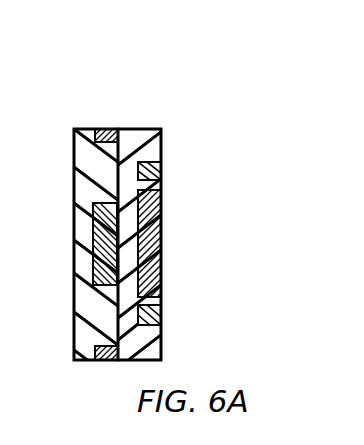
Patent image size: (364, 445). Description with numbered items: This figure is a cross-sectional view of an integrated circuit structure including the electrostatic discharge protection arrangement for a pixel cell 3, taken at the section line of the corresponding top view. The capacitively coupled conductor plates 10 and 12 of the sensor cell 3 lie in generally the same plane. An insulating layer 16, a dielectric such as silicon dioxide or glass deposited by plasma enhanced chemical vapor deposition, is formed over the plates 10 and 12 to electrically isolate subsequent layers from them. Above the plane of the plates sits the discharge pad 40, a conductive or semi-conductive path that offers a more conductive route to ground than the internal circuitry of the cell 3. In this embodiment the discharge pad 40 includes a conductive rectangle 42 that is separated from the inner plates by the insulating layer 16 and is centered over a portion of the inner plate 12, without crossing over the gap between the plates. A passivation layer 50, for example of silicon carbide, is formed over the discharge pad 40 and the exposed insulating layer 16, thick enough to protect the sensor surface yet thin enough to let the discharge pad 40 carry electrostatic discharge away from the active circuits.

The pixel cell 3 is at (131, 80).
The conductor plate 10 is at (162, 165).
The inner conductor plate 12 is at (162, 233).
The insulating layer 16 is at (145, 128).
The discharge pad 40 is at (105, 128).
The conductive rectangle 42 is at (93, 240).
The passivation layer 50 is at (73, 182).